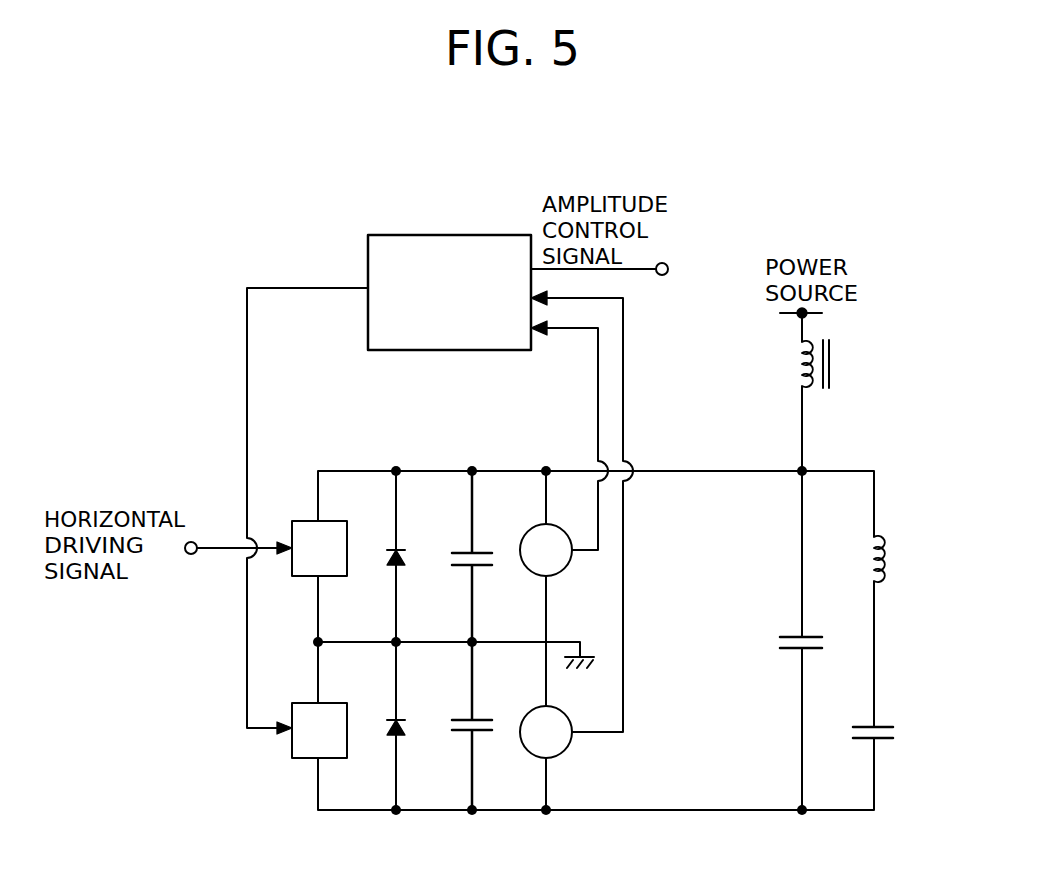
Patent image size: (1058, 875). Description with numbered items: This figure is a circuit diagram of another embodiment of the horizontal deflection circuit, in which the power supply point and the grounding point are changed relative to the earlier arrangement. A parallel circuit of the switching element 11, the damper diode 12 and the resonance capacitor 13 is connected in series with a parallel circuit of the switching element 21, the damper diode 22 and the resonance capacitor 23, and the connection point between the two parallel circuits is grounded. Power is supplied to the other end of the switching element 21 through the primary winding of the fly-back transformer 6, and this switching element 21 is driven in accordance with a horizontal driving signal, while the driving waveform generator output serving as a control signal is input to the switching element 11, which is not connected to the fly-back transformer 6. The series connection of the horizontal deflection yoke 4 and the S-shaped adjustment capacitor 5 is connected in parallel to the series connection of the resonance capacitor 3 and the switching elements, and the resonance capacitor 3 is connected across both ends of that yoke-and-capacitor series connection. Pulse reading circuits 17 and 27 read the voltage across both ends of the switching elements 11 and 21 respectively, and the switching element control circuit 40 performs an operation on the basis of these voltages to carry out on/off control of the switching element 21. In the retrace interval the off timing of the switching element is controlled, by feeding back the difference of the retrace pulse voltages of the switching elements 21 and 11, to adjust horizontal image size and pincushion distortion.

The switching element control circuit 40 is at (428, 233).
The switching element 21 is at (297, 578).
The switching element 11 is at (303, 760).
The damper diode 22 is at (392, 548).
The damper diode 12 is at (392, 737).
The resonance capacitor 23 is at (466, 552).
The resonance capacitor 13 is at (465, 732).
The pulse reading circuit 27 is at (548, 577).
The pulse reading circuit 17 is at (548, 757).
The resonance capacitor 3 is at (812, 635).
The horizontal deflection yoke 4 is at (888, 560).
The S-shaped adjustment capacitor 5 is at (897, 733).
The fly-back transformer 6 is at (832, 360).